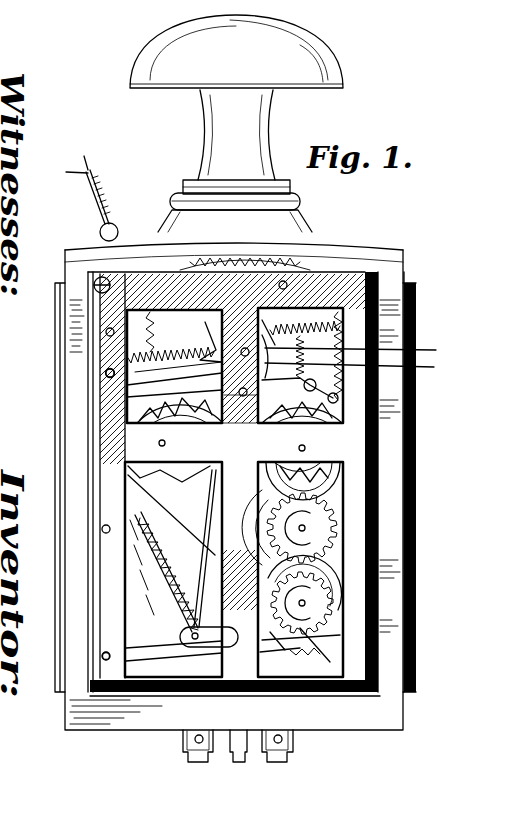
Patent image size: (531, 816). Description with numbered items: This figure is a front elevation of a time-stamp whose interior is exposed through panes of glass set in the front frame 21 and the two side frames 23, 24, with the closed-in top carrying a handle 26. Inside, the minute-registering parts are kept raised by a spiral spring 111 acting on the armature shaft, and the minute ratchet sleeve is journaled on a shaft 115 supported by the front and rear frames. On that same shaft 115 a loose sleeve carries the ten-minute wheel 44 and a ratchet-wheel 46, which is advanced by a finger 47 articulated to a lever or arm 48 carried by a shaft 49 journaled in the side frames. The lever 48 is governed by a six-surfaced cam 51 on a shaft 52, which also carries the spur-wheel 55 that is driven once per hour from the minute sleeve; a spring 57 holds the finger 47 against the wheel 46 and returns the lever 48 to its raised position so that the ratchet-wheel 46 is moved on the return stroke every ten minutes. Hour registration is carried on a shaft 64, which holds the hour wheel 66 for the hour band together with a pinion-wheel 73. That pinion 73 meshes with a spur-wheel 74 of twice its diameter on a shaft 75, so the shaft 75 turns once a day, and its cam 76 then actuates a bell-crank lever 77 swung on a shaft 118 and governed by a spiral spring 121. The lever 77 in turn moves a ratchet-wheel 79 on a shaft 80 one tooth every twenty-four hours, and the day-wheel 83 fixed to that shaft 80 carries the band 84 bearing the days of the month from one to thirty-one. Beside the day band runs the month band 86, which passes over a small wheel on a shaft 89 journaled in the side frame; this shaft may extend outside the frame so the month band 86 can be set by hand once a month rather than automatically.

The handle 26 is at (209, 123).
The front frame 21 is at (436, 303).
The side frame 23 is at (212, 502).
The side frame 24 is at (413, 487).
The shaft 49 is at (105, 373).
The ratchet-wheel 79 is at (135, 422).
The lever or arm 48 is at (174, 385).
The spiral spring 111 is at (178, 366).
The spur-wheel 55 is at (175, 337).
The spring 57 is at (302, 356).
The shaft 52 is at (362, 350).
The cam 51 is at (361, 370).
The wheel 44 is at (259, 415).
The finger 47 is at (336, 401).
The shaft 80 is at (165, 443).
The shaft 115 is at (305, 447).
The ratchet-wheel 46 is at (285, 465).
The wheel 83 is at (183, 485).
The band 84 is at (135, 553).
The spiral spring 121 is at (140, 582).
The band 86 is at (192, 612).
The shaft 89 is at (198, 636).
The shaft 118 is at (106, 652).
The bell-crank lever 77 is at (133, 657).
The shaft 64 is at (306, 528).
The wheel 66 is at (268, 508).
The pinion-wheel 73 is at (275, 530).
The spur-wheel 74 is at (330, 576).
The shaft 75 is at (306, 603).
The cam 76 is at (273, 603).